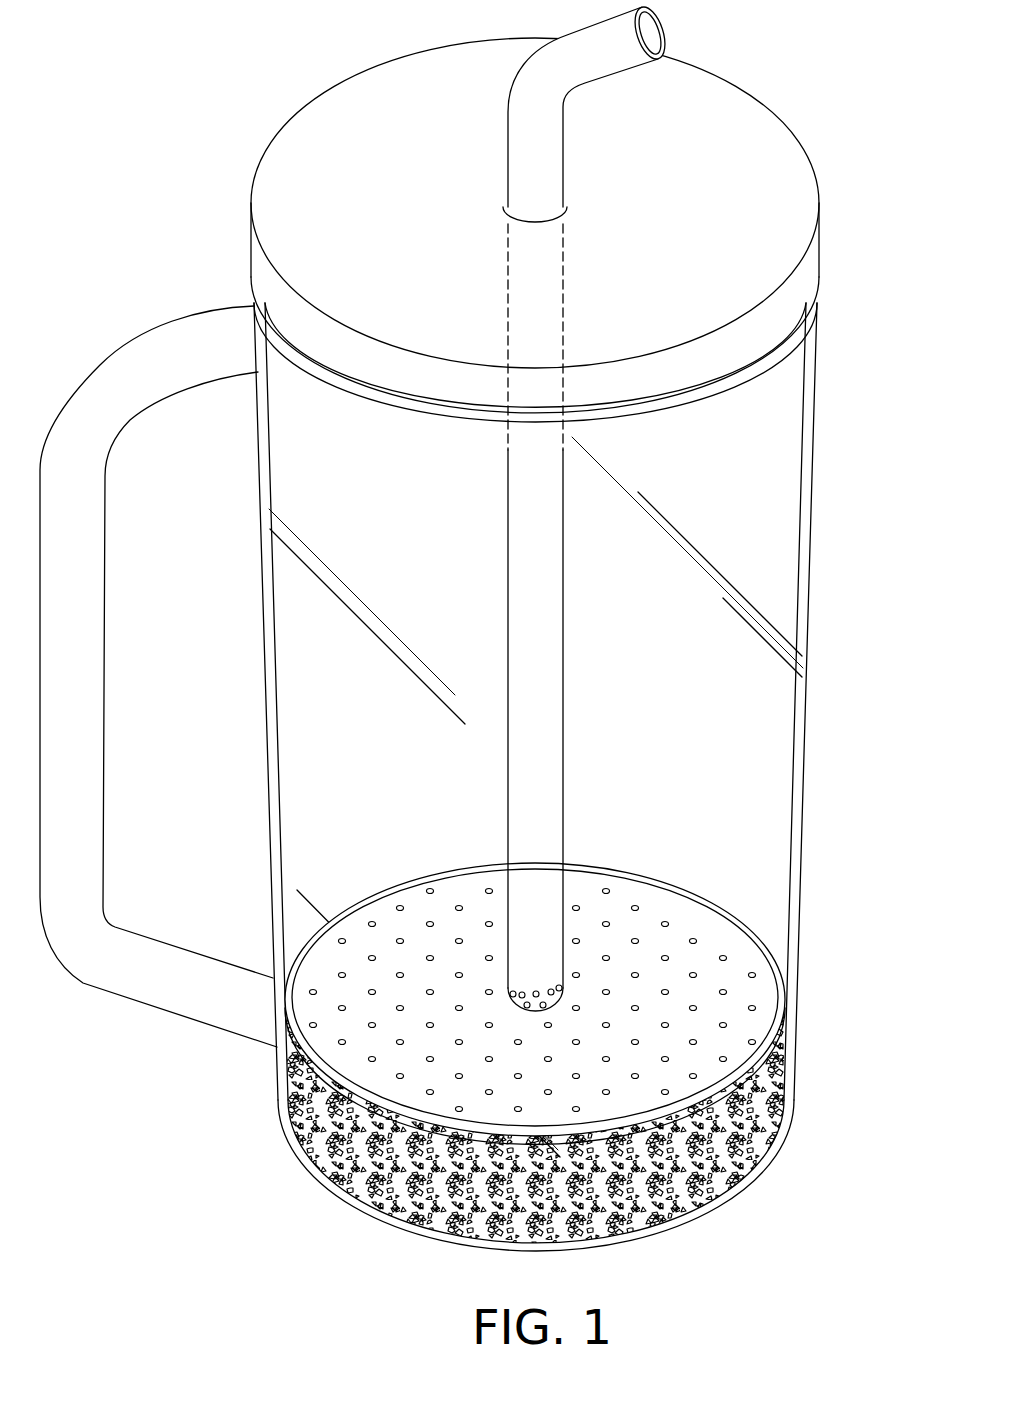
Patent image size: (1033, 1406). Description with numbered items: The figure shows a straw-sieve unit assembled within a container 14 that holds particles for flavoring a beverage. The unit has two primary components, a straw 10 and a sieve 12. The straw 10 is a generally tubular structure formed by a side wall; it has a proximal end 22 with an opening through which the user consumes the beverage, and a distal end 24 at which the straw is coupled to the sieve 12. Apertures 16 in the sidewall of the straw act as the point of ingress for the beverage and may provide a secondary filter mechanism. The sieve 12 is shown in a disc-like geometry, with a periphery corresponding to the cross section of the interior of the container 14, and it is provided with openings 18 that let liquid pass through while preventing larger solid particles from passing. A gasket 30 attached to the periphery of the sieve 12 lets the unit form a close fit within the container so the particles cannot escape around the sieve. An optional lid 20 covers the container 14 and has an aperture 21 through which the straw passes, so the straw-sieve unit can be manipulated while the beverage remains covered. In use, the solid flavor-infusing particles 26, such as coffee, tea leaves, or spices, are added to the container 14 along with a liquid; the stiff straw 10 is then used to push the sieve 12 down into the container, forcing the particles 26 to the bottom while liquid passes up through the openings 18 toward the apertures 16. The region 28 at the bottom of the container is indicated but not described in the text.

The straw 10 is at (564, 630).
The sieve 12 is at (627, 872).
The container 14 is at (807, 717).
The apertures 16 is at (549, 988).
The openings 18 is at (717, 912).
The lid 20 is at (820, 242).
The aperture 21 is at (503, 207).
The proximal end 22 is at (652, 26).
The distal end 24 is at (534, 1012).
The particles 26 is at (704, 1195).
The lower chamber 28 is at (287, 1075).
The gasket 30 is at (779, 1013).